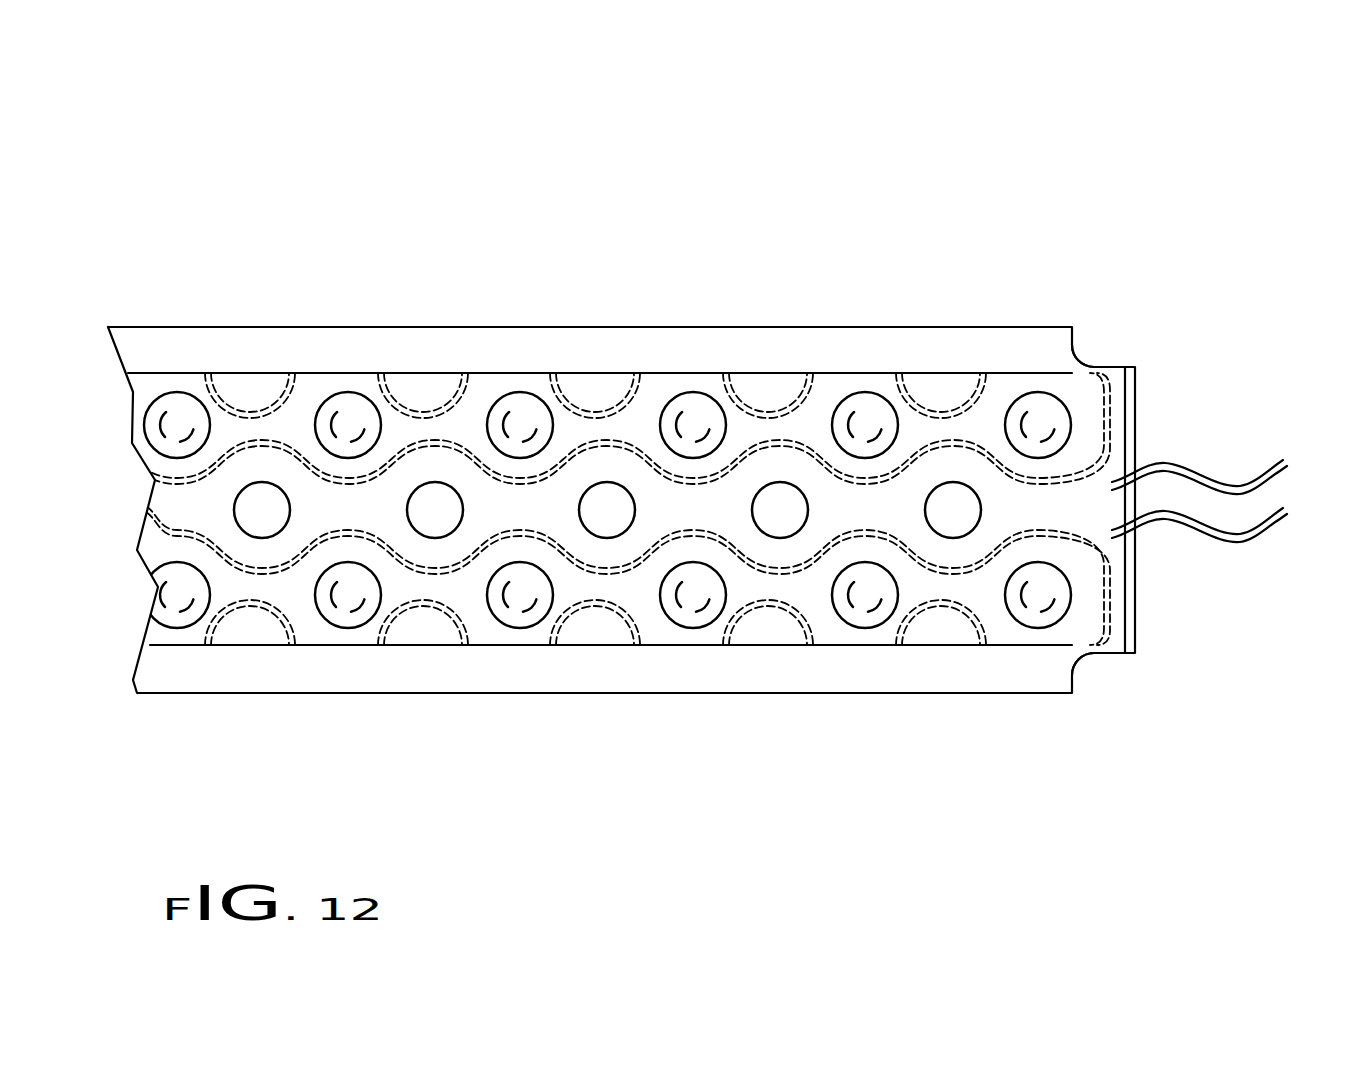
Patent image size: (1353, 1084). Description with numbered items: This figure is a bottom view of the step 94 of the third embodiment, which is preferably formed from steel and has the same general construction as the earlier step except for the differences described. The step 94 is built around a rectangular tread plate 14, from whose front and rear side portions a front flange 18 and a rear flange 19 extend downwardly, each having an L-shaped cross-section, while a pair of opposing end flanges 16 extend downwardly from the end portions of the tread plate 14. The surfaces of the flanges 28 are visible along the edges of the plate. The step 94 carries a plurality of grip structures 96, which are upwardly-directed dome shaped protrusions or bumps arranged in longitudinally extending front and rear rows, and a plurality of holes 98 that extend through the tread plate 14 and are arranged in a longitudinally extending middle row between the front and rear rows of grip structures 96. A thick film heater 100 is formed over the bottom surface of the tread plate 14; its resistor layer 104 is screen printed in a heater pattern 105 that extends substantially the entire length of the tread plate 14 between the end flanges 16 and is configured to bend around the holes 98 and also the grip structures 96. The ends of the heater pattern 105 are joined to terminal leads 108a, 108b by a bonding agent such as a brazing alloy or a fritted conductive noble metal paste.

The step 94 is at (962, 234).
The side rail 28 is at (807, 345).
The thick film heater 100 is at (575, 422).
The resistor layer 104 is at (620, 447).
The heater pattern 105 is at (265, 432).
The grip structures 96 is at (486, 381).
The holes 98 is at (263, 560).
The tread plate 14 is at (236, 627).
The front flange 18 is at (1095, 327).
The rear flange 19 is at (1089, 712).
The end flanges 16 is at (1130, 415).
The terminal lead 108a is at (1228, 478).
The terminal lead 108b is at (1236, 538).